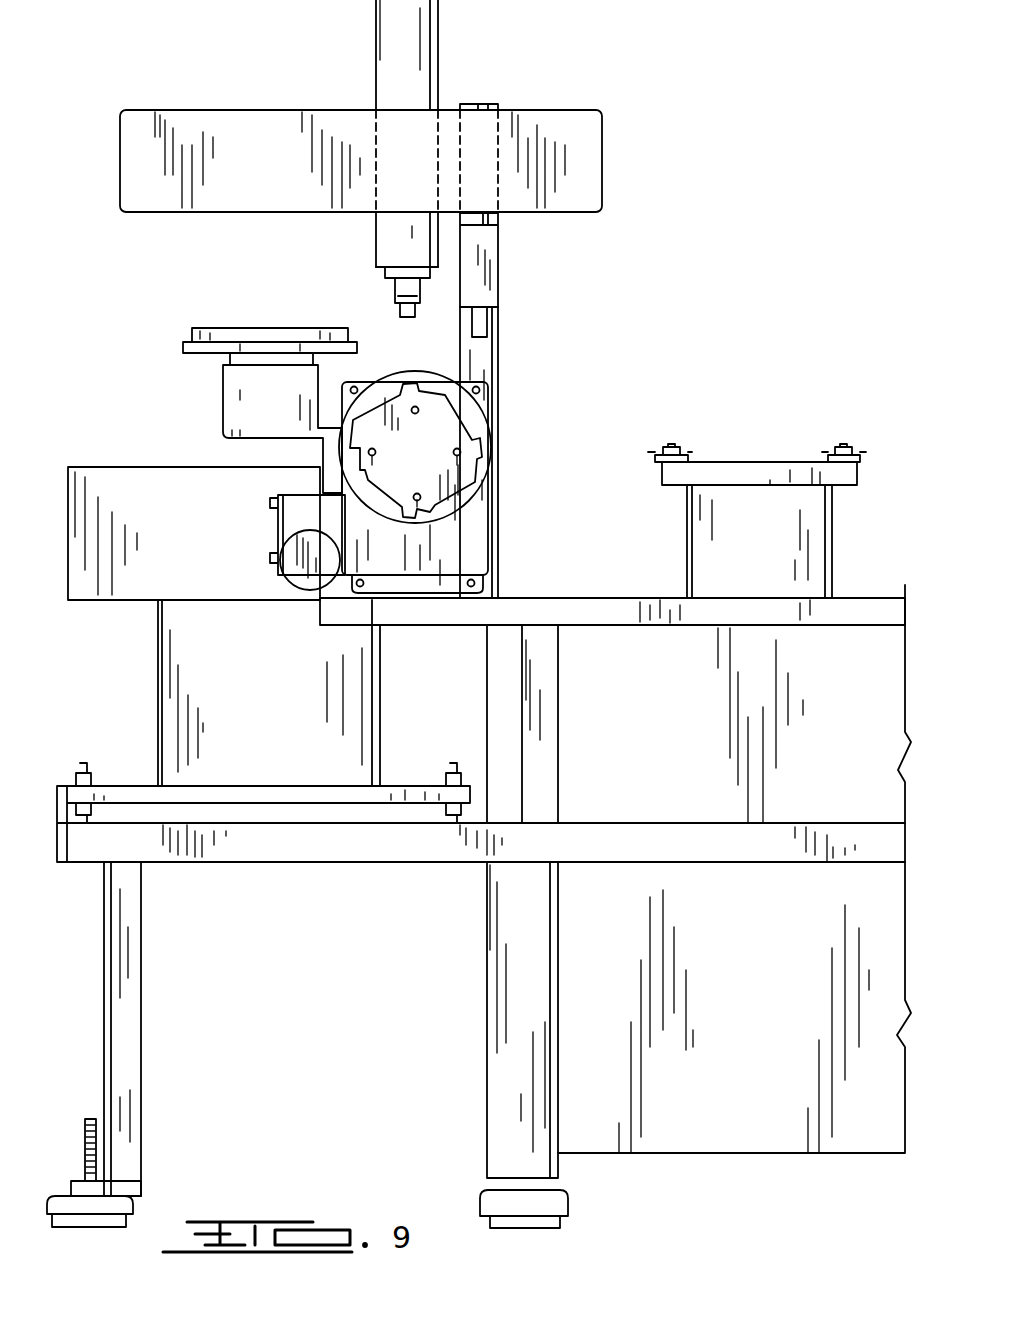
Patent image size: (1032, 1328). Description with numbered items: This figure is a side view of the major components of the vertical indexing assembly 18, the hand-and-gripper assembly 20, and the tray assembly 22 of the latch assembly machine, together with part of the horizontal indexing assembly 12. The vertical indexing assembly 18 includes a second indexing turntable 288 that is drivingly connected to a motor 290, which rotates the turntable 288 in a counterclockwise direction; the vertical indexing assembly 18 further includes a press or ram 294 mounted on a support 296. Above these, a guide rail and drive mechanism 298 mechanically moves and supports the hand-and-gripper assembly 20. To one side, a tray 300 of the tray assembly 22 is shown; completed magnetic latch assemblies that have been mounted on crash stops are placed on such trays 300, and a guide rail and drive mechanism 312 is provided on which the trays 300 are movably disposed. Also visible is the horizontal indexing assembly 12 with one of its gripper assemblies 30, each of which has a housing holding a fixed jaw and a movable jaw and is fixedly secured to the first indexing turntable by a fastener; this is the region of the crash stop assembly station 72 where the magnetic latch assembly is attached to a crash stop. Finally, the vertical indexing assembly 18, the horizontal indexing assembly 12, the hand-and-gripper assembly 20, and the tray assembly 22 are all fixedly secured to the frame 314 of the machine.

The horizontal indexing assembly 12 is at (764, 460).
The vertical indexing assembly 18 is at (457, 438).
The hand-and-gripper assembly 20 is at (376, 232).
The tray assembly 22 is at (225, 373).
The gripper assembly 30 is at (857, 450).
The crash stop assembly station 72 is at (493, 427).
The second indexing turntable 288 is at (386, 381).
The motor 290 is at (290, 573).
The press or ram 294 is at (490, 262).
The support 296 is at (483, 357).
The guide rail and drive mechanism 298 is at (592, 163).
The tray 300 is at (193, 331).
The guide rail and drive mechanism 312 is at (237, 397).
The frame 314 is at (588, 612).